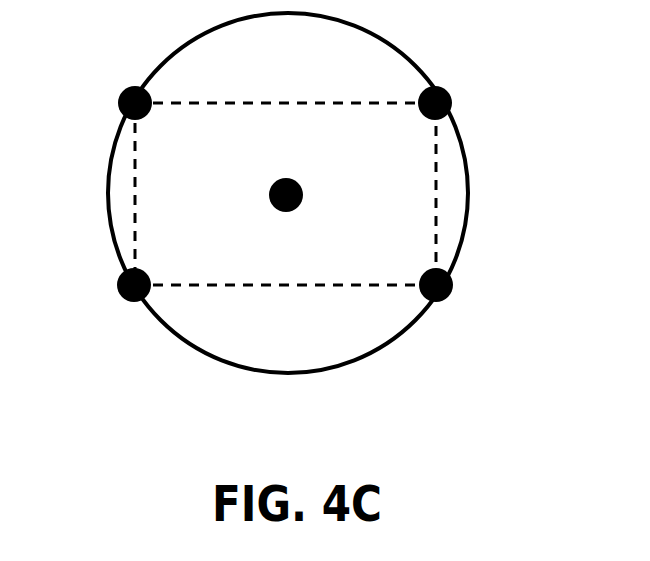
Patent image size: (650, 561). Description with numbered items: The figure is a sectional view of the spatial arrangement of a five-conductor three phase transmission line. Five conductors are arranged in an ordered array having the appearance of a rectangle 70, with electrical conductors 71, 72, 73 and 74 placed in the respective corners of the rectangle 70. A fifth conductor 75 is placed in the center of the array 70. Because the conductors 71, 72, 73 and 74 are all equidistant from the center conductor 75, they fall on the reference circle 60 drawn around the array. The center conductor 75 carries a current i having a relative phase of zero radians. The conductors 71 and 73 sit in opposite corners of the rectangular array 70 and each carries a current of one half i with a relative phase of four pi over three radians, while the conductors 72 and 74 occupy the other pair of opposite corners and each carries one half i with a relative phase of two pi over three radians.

The reference circle 60 is at (348, 365).
The rectangle 70 is at (270, 288).
The electrical conductor 71 is at (446, 86).
The electrical conductor 72 is at (123, 87).
The electrical conductor 73 is at (120, 277).
The electrical conductor 74 is at (451, 277).
The center conductor 75 is at (268, 195).